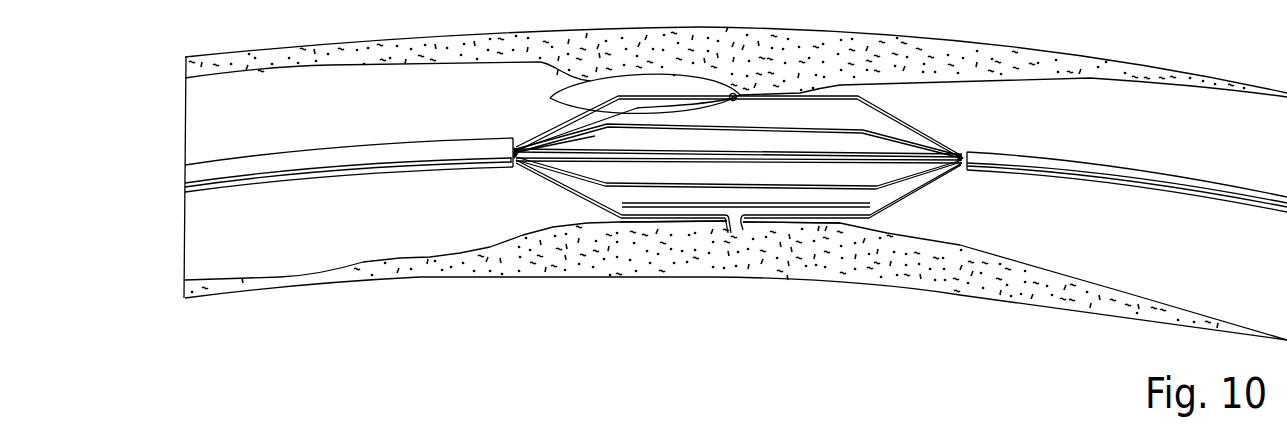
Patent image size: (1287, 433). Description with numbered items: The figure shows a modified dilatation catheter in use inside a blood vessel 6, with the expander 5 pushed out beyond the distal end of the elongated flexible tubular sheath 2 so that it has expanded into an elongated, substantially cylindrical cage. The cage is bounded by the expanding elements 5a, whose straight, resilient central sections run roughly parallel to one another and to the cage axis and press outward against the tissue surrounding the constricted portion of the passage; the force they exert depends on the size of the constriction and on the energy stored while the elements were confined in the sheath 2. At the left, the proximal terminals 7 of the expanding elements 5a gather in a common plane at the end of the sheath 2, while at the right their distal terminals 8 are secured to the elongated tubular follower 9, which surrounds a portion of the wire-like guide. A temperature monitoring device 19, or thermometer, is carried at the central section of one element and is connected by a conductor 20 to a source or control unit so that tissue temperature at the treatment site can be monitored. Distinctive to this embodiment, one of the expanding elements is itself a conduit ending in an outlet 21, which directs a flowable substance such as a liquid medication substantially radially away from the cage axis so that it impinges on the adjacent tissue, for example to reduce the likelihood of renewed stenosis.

The tubular sheath 2 is at (275, 152).
The expander 5 is at (533, 201).
The expanding element 5a is at (858, 94).
The blood vessel 6 is at (1022, 47).
The proximal terminal 7 is at (590, 137).
The distal terminal 8 is at (845, 122).
The tubular follower 9 is at (1133, 174).
The temperature monitoring device 19 is at (585, 83).
The conductor 20 is at (592, 126).
The outlet 21 is at (733, 233).